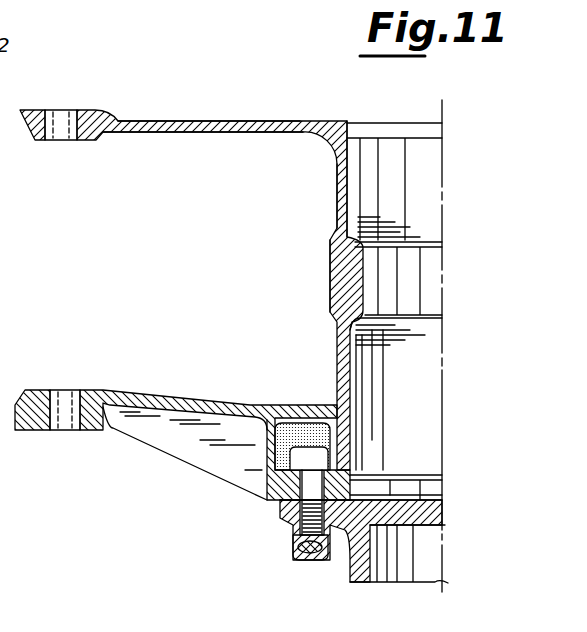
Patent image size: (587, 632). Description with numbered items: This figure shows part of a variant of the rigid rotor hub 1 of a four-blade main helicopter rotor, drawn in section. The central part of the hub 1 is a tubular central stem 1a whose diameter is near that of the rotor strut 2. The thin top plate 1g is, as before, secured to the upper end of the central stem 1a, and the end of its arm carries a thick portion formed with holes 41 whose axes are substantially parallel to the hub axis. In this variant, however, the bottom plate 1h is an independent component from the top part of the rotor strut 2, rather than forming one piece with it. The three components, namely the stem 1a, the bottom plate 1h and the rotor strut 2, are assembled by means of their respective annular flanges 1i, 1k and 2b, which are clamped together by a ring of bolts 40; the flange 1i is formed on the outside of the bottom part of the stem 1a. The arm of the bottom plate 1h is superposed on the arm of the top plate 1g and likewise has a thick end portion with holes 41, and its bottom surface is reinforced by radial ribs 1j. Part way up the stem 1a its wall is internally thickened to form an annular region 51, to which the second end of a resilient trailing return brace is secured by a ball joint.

The hub 1 is at (326, 239).
The central stem 1a is at (340, 188).
The top plate 1g is at (193, 130).
The bottom plate 1h is at (182, 402).
The annular flange 1i is at (352, 462).
The radial ribs 1j is at (180, 433).
The annular flange 1k is at (370, 490).
The rotor strut 2 is at (357, 558).
The annular flange 2b is at (287, 513).
The bolts 40 is at (313, 447).
The holes 41 is at (65, 115).
The annular region 51 is at (347, 285).